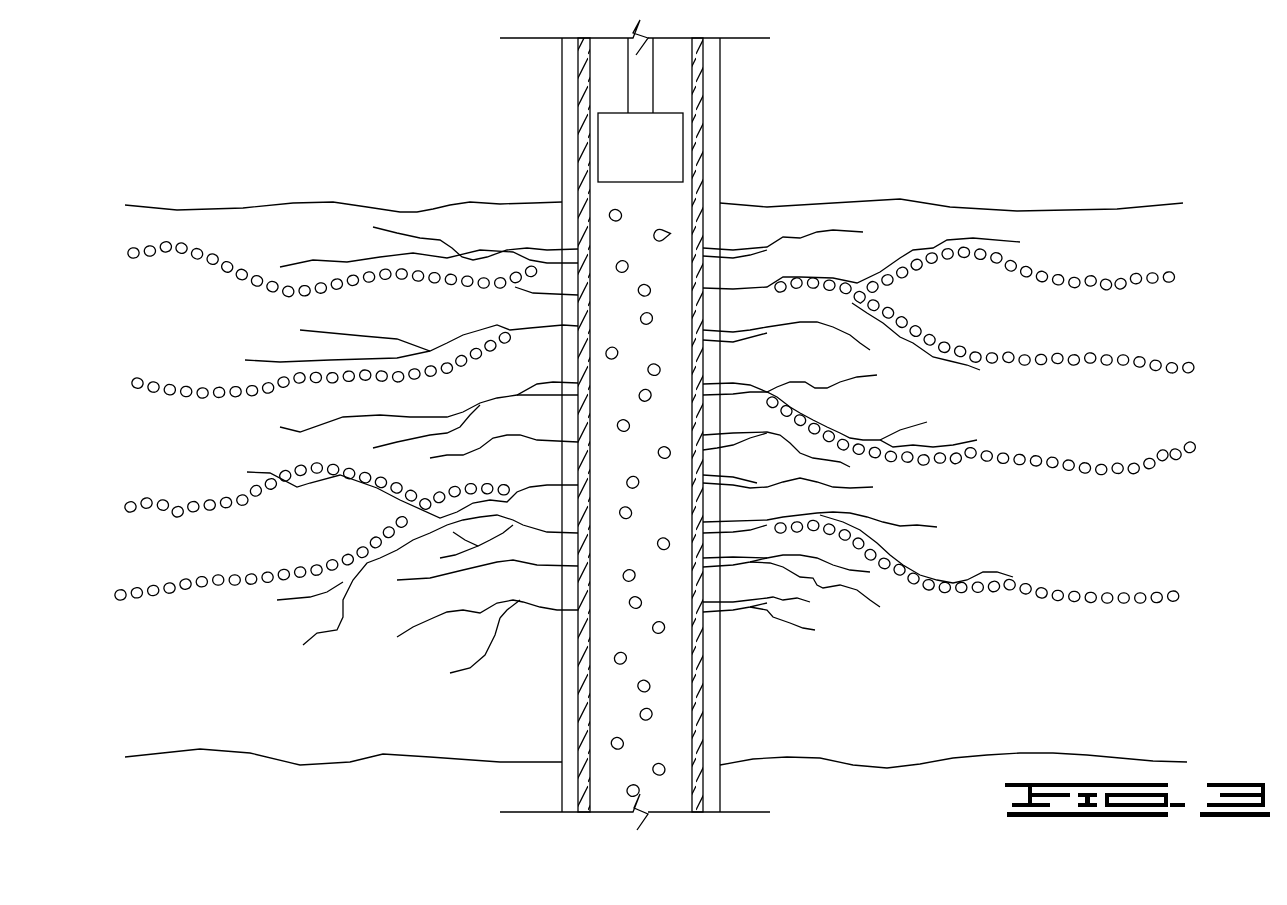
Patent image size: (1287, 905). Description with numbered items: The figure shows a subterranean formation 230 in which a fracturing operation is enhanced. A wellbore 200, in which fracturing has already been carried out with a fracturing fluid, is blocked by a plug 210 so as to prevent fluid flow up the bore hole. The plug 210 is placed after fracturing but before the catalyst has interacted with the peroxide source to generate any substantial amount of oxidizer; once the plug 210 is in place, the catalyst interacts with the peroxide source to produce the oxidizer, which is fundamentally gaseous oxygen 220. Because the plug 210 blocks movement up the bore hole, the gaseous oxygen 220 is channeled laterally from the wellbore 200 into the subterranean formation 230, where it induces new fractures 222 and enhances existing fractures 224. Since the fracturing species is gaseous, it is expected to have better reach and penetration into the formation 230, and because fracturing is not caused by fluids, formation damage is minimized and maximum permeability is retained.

The wellbore 200 is at (677, 95).
The plug 210 is at (613, 157).
The gaseous oxygen 220 is at (190, 390).
The fractures 222 is at (990, 240).
The existing fractures 224 is at (733, 247).
The subterranean formation 230 is at (232, 665).